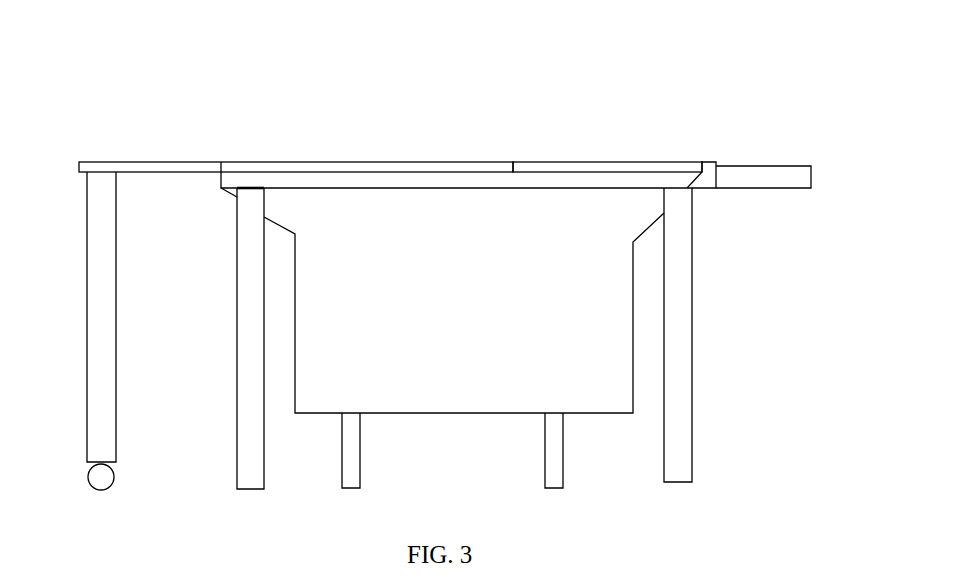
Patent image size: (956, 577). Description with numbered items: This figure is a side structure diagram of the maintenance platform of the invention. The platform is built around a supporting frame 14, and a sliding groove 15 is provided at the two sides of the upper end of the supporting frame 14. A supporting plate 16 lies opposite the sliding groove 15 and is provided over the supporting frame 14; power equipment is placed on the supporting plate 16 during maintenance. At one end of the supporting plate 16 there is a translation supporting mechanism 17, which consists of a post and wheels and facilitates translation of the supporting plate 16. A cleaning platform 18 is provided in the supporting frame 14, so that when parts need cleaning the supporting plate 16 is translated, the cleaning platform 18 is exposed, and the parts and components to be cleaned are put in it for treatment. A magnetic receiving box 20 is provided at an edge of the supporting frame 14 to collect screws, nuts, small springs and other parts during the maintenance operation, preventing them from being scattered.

The supporting frame 14 is at (528, 184).
The sliding groove 15 is at (656, 171).
The supporting plate 16 is at (148, 167).
The translation supporting mechanism 17 is at (108, 415).
The cleaning platform 18 is at (377, 383).
The magnetic receiving box 20 is at (757, 180).